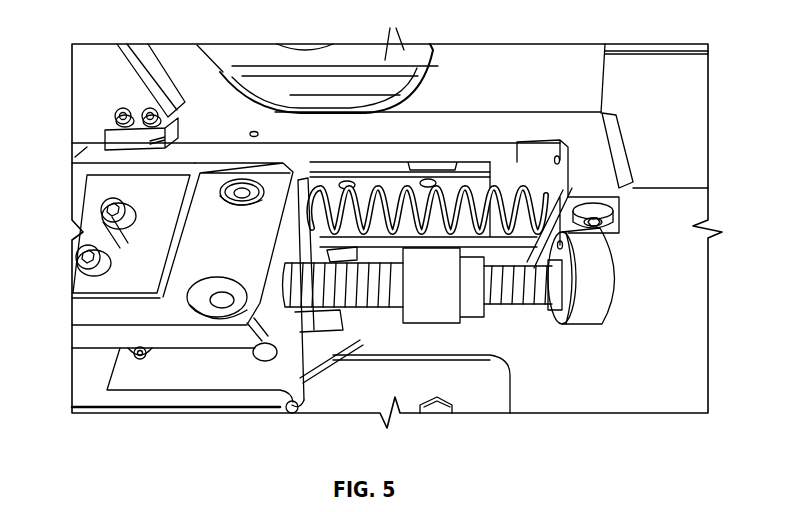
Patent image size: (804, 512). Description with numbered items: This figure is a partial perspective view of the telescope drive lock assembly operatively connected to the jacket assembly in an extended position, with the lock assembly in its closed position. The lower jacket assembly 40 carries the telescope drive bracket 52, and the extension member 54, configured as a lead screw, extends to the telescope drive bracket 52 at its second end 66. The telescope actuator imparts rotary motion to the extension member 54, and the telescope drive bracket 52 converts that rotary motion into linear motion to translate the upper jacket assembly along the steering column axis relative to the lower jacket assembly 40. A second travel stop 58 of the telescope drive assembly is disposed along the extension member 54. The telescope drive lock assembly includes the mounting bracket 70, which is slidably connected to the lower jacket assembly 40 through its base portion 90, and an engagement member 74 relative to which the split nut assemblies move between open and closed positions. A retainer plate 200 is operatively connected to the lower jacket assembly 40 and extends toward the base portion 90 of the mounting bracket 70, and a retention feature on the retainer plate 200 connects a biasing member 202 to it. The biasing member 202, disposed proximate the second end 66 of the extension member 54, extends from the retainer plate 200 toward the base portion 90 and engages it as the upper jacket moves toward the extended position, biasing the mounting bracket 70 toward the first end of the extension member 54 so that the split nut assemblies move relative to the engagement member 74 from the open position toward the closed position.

The lower jacket assembly 40 is at (488, 60).
The retainer plate 200 is at (632, 155).
The biasing member 202 is at (513, 185).
The base portion 90 is at (303, 192).
The extension member 54 is at (326, 270).
The mounting bracket 70 is at (84, 318).
The second travel stop 58 is at (432, 318).
The second end 66 is at (520, 304).
The telescope drive bracket 52 is at (585, 327).
The engagement member 74 is at (308, 360).